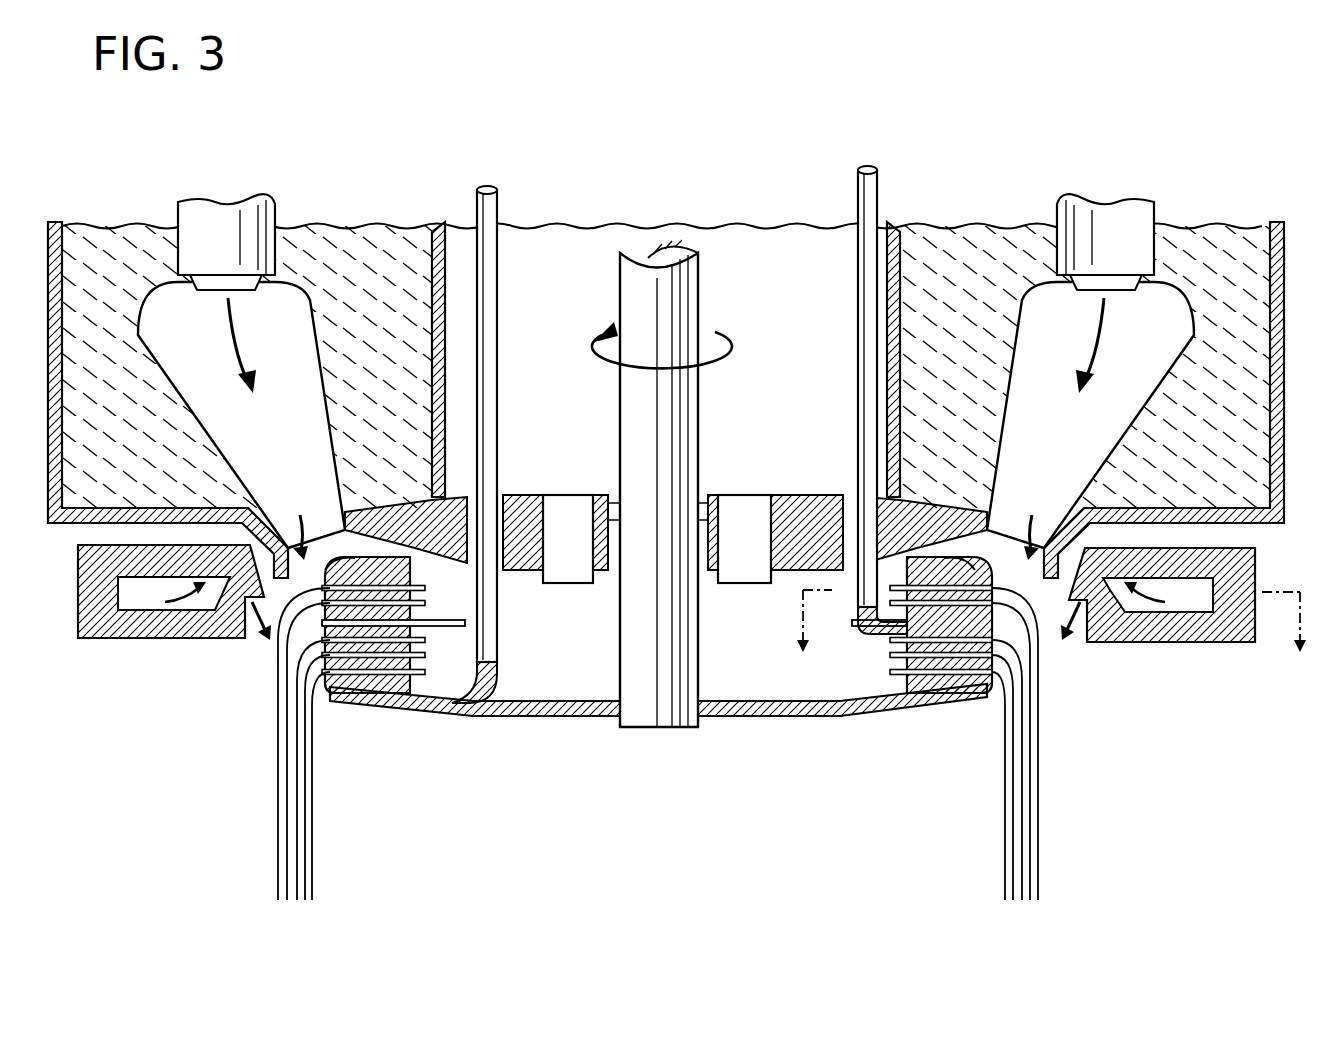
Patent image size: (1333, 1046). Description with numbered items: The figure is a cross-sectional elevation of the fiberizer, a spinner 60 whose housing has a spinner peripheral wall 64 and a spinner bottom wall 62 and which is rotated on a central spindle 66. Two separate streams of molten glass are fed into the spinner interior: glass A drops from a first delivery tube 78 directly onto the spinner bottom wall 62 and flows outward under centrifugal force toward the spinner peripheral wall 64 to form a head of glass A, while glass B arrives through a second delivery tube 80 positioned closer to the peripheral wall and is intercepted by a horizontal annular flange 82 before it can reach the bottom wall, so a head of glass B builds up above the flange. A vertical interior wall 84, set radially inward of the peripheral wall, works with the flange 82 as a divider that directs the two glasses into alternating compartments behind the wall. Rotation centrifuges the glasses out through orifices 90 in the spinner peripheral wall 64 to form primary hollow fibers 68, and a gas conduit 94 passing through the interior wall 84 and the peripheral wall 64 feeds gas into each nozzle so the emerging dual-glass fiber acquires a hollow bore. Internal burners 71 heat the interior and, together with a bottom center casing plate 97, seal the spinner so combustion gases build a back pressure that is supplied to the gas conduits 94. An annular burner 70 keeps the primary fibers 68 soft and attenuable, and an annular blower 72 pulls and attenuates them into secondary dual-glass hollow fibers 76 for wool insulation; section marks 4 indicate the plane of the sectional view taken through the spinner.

The spinner 60 is at (746, 752).
The spinner bottom wall 62 is at (985, 700).
The spinner peripheral wall 64 is at (362, 675).
The spindle 66 is at (693, 285).
The primary hollow fibers 68 is at (298, 700).
The annular burner 70 is at (285, 226).
The internal burner 71 is at (566, 510).
The annular blower 72 is at (80, 608).
The secondary dual-glass hollow fibers 76 is at (268, 831).
The first delivery tube 78 is at (497, 203).
The second delivery tube 80 is at (877, 193).
The horizontal annular flange 82 is at (465, 623).
The vertical interior wall 84 is at (360, 560).
The orifices 90 is at (328, 578).
The gas conduit 94 is at (425, 588).
The bottom center casing plate 97 is at (458, 493).
The section line 4- 4 is at (1052, 621).
The glass A is at (473, 700).
The glass B is at (925, 545).